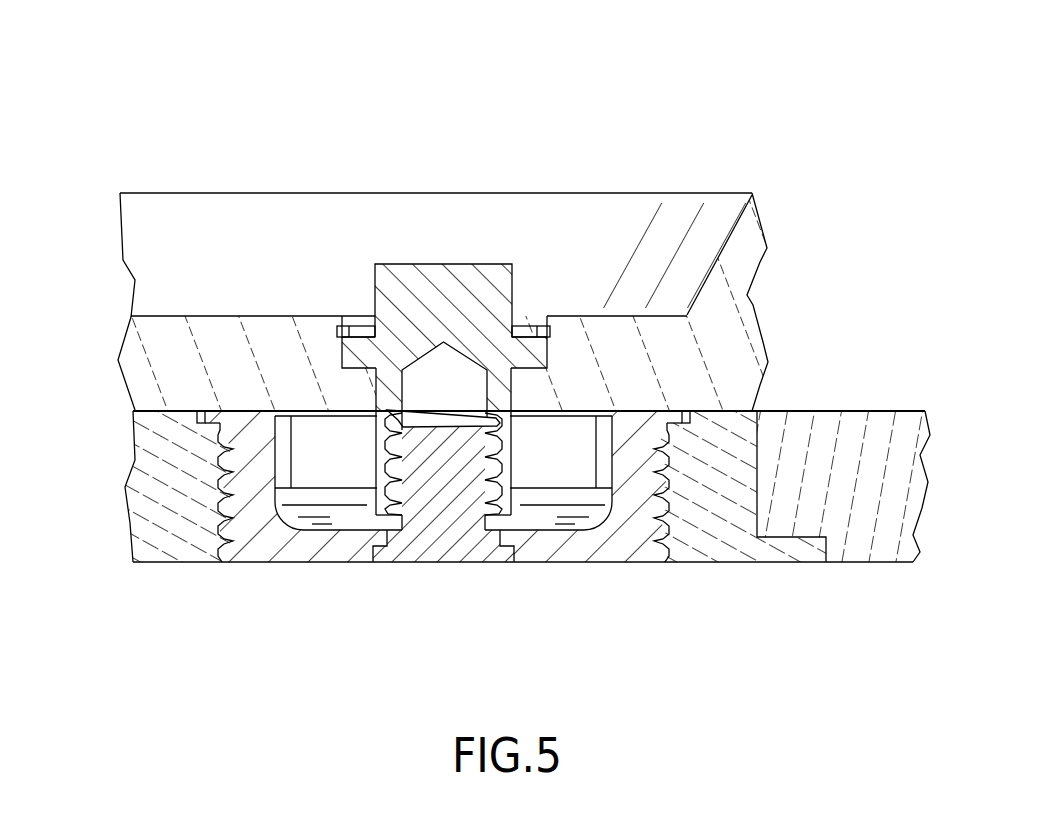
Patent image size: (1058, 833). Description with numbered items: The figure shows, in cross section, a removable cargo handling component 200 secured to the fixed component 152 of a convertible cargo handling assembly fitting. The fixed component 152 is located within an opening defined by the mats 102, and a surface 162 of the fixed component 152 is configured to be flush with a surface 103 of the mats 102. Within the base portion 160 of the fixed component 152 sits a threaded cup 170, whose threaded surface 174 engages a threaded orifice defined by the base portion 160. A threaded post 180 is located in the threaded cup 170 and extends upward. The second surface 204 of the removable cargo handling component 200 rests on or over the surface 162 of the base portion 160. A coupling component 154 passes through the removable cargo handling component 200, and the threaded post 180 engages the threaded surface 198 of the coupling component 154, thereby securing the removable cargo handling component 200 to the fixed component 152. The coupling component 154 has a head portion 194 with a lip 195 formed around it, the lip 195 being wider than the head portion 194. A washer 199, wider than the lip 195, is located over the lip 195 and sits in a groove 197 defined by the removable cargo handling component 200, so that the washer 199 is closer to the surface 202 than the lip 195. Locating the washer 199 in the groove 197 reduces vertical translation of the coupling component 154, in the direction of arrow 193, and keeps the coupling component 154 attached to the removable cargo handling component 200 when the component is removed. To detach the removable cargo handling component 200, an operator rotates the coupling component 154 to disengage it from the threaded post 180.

The mats 102 is at (868, 515).
The surface of mats 103 is at (903, 411).
The fixed component 152 is at (135, 553).
The coupling component 154 is at (407, 256).
The base portion 160 is at (716, 508).
The surface of fixed component 162 is at (703, 410).
The threaded cup 170 is at (266, 533).
The threaded surface 174 is at (212, 526).
The threaded post 180 is at (420, 533).
The arrow 193 is at (435, 34).
The head portion 194 is at (448, 288).
The lip 195 is at (340, 352).
The groove 197 is at (556, 308).
The threaded surface 198 is at (478, 504).
The washer 199 is at (543, 327).
The removable cargo handling component 200 is at (720, 330).
The surface of removable cargo handling component 202 is at (160, 316).
The second surface of removable cargo handling component 204 is at (170, 413).